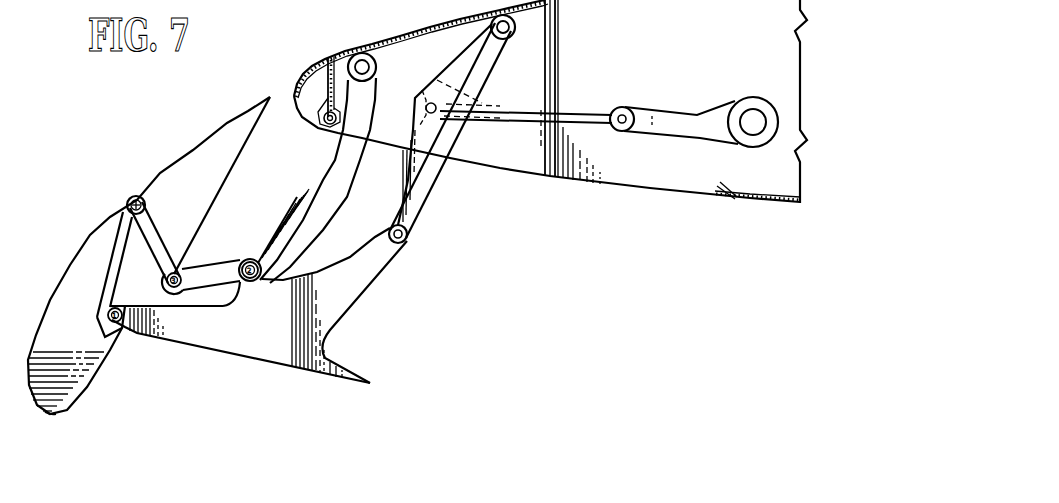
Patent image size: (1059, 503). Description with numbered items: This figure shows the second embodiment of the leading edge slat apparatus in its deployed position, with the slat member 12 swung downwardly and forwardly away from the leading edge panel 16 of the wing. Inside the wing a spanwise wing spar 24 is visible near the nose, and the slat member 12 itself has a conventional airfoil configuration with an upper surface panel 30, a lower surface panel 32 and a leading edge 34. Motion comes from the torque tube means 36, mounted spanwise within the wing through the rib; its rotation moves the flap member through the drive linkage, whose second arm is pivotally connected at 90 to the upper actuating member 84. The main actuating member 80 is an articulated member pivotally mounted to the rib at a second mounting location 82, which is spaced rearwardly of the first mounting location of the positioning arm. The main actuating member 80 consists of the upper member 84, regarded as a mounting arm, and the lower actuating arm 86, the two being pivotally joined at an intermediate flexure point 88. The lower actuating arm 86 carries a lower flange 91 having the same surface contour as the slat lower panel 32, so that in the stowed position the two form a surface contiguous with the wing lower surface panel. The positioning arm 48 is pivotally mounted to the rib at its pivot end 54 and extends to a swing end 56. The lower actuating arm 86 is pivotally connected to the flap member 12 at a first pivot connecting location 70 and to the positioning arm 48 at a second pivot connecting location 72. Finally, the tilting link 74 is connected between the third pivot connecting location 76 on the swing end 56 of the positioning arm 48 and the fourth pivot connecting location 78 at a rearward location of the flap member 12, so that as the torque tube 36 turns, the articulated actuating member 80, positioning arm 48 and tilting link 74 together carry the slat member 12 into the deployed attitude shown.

The leading edge slat member 12 is at (84, 345).
The leading edge panel 16 is at (298, 92).
The wing spar 24 is at (318, 61).
The upper surface panel 30 is at (90, 233).
The lower surface panel 32 is at (212, 204).
The leading edge 34 is at (56, 418).
The torque tube means 36 is at (750, 122).
The positioning arm 48 is at (338, 166).
The pivot end 54 is at (366, 94).
The swing end 56 is at (205, 268).
The first pivot connecting location 70 is at (110, 329).
The second pivot connecting location 72 is at (258, 262).
The tilting link 74 is at (157, 238).
The third pivot connecting location 76 is at (187, 291).
The fourth pivot connecting location 78 is at (136, 194).
The main actuating member 80 is at (415, 250).
The second mounting location 82 is at (515, 27).
The upper actuating member 84 is at (430, 173).
The lower actuating arm 86 is at (270, 338).
The intermediate flexure point 88 is at (391, 230).
The pivot connection 90 is at (432, 103).
The lower flange 91 is at (222, 353).